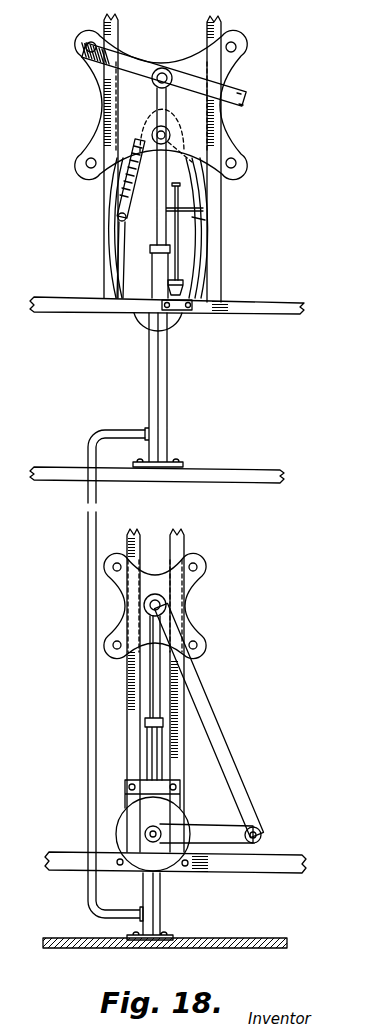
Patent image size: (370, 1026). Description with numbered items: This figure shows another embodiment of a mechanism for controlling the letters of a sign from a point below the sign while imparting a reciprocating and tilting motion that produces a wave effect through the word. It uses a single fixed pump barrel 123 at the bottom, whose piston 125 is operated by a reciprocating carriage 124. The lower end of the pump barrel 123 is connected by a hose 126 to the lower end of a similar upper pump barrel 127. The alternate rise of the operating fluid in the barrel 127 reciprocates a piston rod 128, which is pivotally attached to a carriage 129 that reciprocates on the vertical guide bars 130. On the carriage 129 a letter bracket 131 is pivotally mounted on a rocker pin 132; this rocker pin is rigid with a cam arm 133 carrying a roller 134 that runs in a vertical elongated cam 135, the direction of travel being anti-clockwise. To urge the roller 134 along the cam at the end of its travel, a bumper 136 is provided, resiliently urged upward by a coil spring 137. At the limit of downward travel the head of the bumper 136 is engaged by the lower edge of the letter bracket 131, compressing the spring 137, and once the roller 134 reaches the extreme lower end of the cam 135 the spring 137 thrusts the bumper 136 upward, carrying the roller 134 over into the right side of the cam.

The pump barrel 123 is at (163, 772).
The carriage 124 is at (151, 575).
The piston 125 is at (190, 679).
The hose 126 is at (90, 543).
The pump barrel 127 is at (161, 381).
The piston rod 128 is at (167, 209).
The carriage 129 is at (195, 61).
The vertical guide bars 130 is at (113, 262).
The letter bracket 131 is at (139, 61).
The rocker pin 132 is at (158, 96).
The cam arm 133 is at (120, 196).
The roller 134 is at (122, 229).
The vertical elongated cam 135 is at (207, 188).
The bumper 136 is at (172, 251).
The coil spring 137 is at (184, 289).